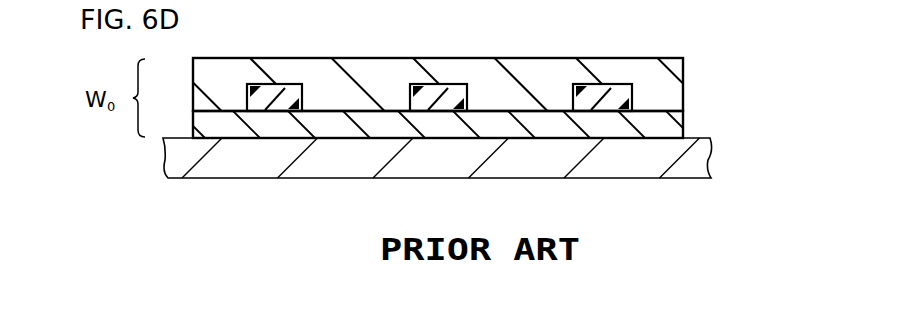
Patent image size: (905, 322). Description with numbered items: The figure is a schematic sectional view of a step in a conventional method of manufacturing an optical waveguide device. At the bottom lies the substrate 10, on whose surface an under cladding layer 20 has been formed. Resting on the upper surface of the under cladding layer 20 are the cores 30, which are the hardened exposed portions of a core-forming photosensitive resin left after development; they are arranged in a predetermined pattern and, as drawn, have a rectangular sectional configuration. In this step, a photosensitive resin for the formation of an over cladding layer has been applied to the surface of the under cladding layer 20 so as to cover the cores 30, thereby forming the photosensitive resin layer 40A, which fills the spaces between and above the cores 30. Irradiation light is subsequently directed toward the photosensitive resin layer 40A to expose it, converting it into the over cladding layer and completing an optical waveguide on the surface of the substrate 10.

The substrate 10 is at (697, 159).
The under cladding layer 20 is at (670, 123).
The cores 30 is at (436, 83).
The photosensitive resin layer 40A is at (533, 72).